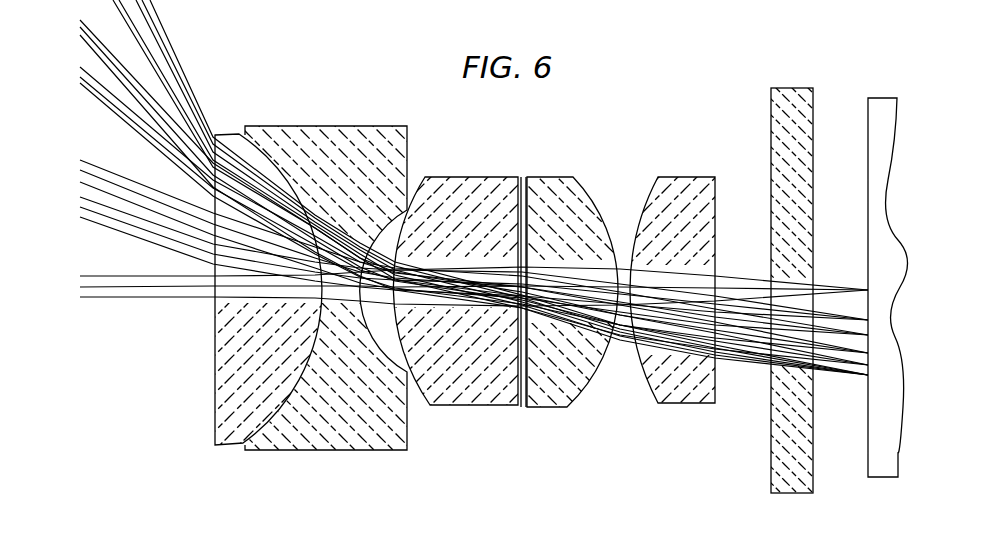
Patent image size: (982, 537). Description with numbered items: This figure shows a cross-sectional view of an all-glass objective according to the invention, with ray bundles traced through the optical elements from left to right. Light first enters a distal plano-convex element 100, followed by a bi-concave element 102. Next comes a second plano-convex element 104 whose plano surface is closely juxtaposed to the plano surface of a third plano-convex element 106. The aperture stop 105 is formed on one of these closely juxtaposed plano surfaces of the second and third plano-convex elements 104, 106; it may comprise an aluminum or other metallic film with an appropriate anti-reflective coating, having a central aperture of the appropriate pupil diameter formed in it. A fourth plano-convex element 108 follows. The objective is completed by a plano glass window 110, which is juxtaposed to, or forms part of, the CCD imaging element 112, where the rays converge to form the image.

The distal plano-convex element 100 is at (222, 132).
The bi-concave element 102 is at (322, 126).
The second plano-convex element 104 is at (478, 157).
The aperture stop 105 is at (523, 177).
The third plano-convex element 106 is at (567, 177).
The fourth plano-convex element 108 is at (686, 177).
The plano glass window 110 is at (789, 88).
The CCD imaging element 112 is at (872, 98).